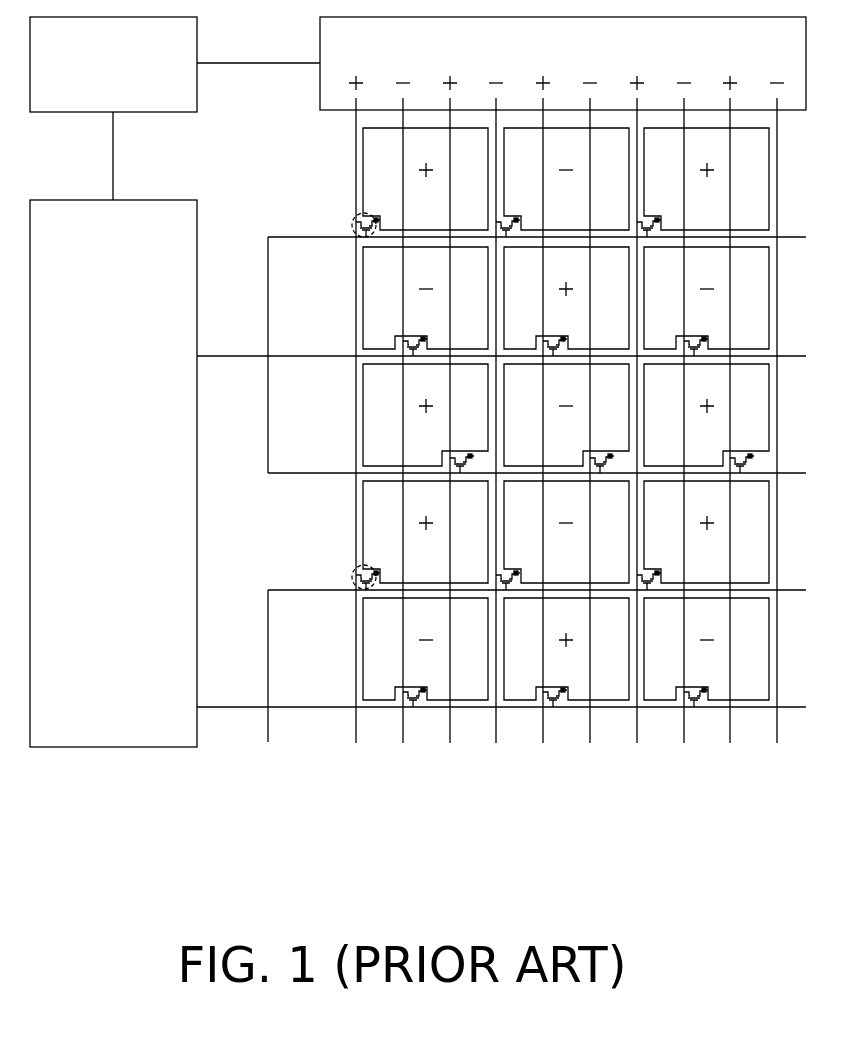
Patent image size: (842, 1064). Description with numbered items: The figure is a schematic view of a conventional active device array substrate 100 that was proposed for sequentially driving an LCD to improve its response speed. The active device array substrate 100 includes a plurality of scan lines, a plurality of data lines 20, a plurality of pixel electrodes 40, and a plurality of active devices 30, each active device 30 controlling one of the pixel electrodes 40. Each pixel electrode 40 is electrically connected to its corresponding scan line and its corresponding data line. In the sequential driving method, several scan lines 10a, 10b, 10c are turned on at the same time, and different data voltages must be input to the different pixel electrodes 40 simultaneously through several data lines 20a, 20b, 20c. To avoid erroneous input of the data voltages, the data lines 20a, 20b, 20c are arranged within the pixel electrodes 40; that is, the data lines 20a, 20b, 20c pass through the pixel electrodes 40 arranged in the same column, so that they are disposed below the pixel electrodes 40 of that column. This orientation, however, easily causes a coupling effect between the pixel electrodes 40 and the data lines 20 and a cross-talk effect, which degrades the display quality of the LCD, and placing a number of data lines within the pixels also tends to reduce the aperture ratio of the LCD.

The active device array substrate 100 is at (821, 829).
The scan line 10a is at (310, 240).
The scan line 10b is at (310, 359).
The scan line 10c is at (310, 476).
The data lines 20 is at (561, 462).
The data line 20a is at (561, 440).
The data line 20b is at (537, 440).
The data line 20c is at (583, 440).
The active device 30 is at (352, 228).
The pixel electrode 40 is at (363, 163).